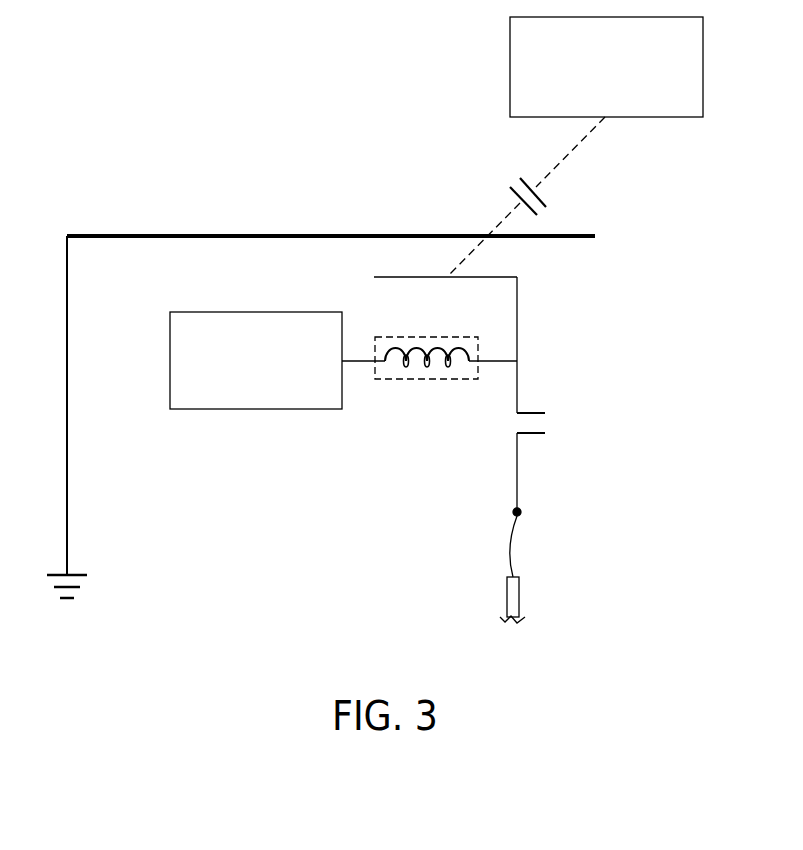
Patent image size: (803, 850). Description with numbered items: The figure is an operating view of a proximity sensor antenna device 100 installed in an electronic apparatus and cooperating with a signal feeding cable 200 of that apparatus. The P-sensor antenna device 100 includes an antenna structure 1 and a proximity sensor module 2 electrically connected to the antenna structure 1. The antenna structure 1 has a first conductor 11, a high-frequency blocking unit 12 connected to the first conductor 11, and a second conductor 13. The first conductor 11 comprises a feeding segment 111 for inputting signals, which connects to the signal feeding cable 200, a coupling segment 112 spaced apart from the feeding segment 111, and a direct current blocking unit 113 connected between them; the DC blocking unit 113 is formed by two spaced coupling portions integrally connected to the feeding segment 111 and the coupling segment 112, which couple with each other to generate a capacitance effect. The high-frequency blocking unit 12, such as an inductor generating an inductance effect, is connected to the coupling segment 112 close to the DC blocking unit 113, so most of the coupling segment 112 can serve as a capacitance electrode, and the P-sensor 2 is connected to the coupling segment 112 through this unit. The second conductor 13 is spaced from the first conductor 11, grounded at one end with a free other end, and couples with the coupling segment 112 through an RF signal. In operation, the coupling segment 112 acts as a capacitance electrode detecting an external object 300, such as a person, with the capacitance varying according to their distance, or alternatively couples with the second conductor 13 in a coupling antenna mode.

The antenna structure 1 is at (570, 354).
The first conductor 11 is at (555, 394).
The feeding segment 111 is at (604, 472).
The coupling segment 112 is at (517, 332).
The direct current blocking unit 113 is at (604, 425).
The high-frequency blocking unit 12 is at (447, 336).
The second conductor 13 is at (588, 220).
The proximity sensor module 2 is at (255, 410).
The proximity sensor antenna device 100 is at (71, 214).
The signal feeding cable 200 is at (526, 598).
The external object 300 is at (503, 62).